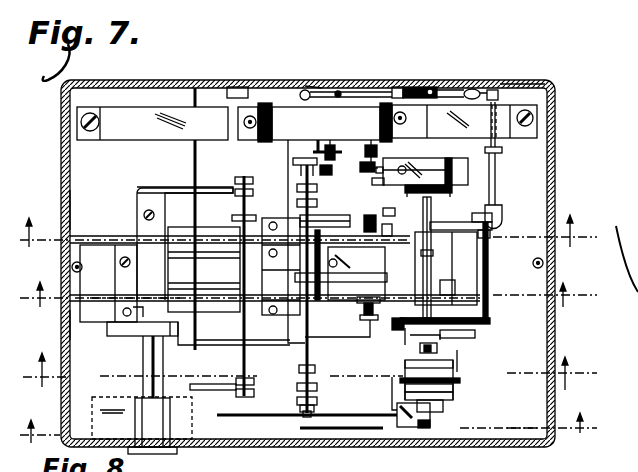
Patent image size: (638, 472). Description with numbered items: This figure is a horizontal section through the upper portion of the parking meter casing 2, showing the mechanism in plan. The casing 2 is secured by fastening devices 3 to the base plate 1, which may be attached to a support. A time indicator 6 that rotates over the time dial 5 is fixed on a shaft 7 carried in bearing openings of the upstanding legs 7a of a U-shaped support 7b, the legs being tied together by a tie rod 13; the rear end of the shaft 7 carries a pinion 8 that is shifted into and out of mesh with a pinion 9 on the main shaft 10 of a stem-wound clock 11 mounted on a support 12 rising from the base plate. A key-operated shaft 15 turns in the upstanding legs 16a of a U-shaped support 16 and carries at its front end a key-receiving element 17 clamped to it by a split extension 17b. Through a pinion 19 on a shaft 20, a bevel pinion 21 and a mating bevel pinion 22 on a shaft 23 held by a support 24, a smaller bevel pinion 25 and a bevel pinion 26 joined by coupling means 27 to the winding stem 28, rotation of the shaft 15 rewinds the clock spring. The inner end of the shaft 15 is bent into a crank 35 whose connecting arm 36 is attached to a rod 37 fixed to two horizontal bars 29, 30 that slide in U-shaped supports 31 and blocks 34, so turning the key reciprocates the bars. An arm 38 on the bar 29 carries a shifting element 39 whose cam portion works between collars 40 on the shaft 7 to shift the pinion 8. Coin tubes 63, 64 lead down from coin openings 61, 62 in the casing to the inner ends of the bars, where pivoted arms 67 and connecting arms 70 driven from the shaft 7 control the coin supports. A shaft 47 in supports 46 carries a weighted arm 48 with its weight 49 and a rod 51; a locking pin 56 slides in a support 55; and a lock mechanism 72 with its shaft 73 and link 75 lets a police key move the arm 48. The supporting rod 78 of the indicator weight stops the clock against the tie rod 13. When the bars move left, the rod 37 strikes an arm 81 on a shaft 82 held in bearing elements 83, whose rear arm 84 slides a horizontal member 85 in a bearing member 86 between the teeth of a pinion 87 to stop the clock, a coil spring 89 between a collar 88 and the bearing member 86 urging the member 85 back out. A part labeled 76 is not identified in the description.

The base plate 1 is at (88, 182).
The casing 2 is at (553, 80).
The fastening devices 3 is at (72, 267).
The time dial 5 is at (263, 418).
The time indicator 6 is at (348, 426).
The shaft 7 is at (316, 396).
The upstanding legs 7a is at (297, 188).
The U-shaped support 7b is at (297, 203).
The pinion 8 is at (293, 166).
The pinion 9 is at (318, 147).
The main shaft 10 is at (308, 242).
The clock 11 is at (267, 102).
The support 12 is at (133, 117).
The tie rod 13 is at (358, 222).
The shaft 15 is at (443, 410).
The U-shaped support 16 is at (462, 380).
The upstanding legs 16a is at (462, 394).
The key-receiving element 17 is at (398, 433).
The split extension 17b is at (430, 425).
The pinion 19 is at (460, 372).
The shaft 20 is at (432, 212).
The bevel pinion 21 is at (382, 228).
The bevel pinion 22 is at (448, 158).
The shaft 23 is at (395, 215).
The support 24 is at (489, 178).
The bevel pinion 25 is at (405, 190).
The bevel pinion 26 is at (362, 168).
The coupling means 27 is at (345, 155).
The winding stem 28 is at (371, 145).
The bar 29 is at (492, 319).
The bar 30 is at (489, 251).
The U-shaped supports 31 is at (434, 285).
The blocks 34 is at (448, 248).
The crank 35 is at (410, 332).
The connecting arm 36 is at (468, 336).
The rod 37 is at (488, 283).
The arm 38 is at (382, 297).
The shifting element 39 is at (338, 338).
The collars 40 is at (300, 343).
The supports 46 is at (160, 188).
The shaft 47 is at (247, 354).
The arm 48 is at (140, 338).
The weight 49 is at (118, 330).
The rod 51 is at (243, 246).
The support 55 is at (428, 340).
The locking pin 56 is at (392, 324).
The coin opening 61 is at (70, 320).
The coin opening 62 is at (70, 230).
The coin tube 63 is at (82, 305).
The coin tube 64 is at (98, 236).
The arm 67 is at (372, 285).
The connecting arm 70 is at (352, 272).
The lock mechanism 72 is at (142, 409).
The shaft 73 is at (143, 362).
The link 75 is at (205, 312).
The post 76 is at (194, 163).
The supporting rod 78 is at (299, 369).
The upstanding arm 81 is at (445, 278).
The shaft 82 is at (497, 167).
The bearing elements 83 is at (502, 147).
The upstanding arm 84 is at (492, 90).
The horizontal member 85 is at (455, 90).
The bearing member 86 is at (400, 87).
The pinion 87 is at (327, 87).
The collar 88 is at (432, 87).
The expansible coil spring 89 is at (418, 87).